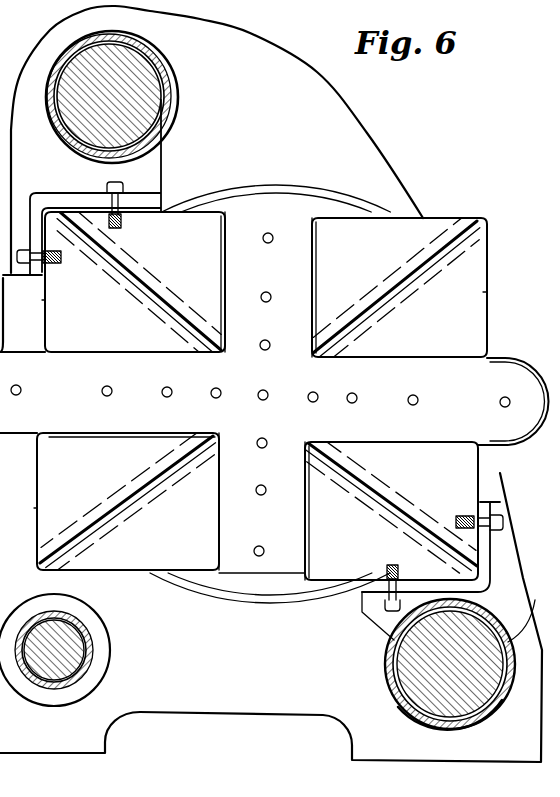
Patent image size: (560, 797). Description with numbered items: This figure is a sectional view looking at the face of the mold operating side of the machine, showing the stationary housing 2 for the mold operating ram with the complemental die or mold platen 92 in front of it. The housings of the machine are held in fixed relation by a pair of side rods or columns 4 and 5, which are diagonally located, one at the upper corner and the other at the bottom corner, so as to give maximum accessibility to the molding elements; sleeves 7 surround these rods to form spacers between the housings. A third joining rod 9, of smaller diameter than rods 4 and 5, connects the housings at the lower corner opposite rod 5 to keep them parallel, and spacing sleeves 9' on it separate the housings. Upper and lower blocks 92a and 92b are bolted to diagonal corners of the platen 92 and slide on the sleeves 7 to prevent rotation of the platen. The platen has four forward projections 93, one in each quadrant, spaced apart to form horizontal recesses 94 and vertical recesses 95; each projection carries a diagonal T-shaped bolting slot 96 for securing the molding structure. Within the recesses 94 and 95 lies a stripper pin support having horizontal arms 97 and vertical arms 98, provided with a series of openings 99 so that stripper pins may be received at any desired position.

The stationary housing 2 is at (396, 122).
The side rod 4 is at (150, 88).
The side rod 5 is at (410, 666).
The sleeve 7 is at (170, 104).
The third joining rod 9 is at (70, 638).
The spacing sleeve 9' is at (67, 650).
The mold platen 92 is at (446, 196).
The upper block 92a is at (150, 173).
The lower block 92b is at (512, 566).
The forward projection 93 is at (52, 300).
The horizontal recess 94 is at (128, 330).
The vertical recess 95 is at (314, 272).
The diagonal T-shaped bolting slot 96 is at (146, 295).
The horizontal arm 97 is at (500, 374).
The vertical arm 98 is at (295, 300).
The opening 99 is at (271, 243).